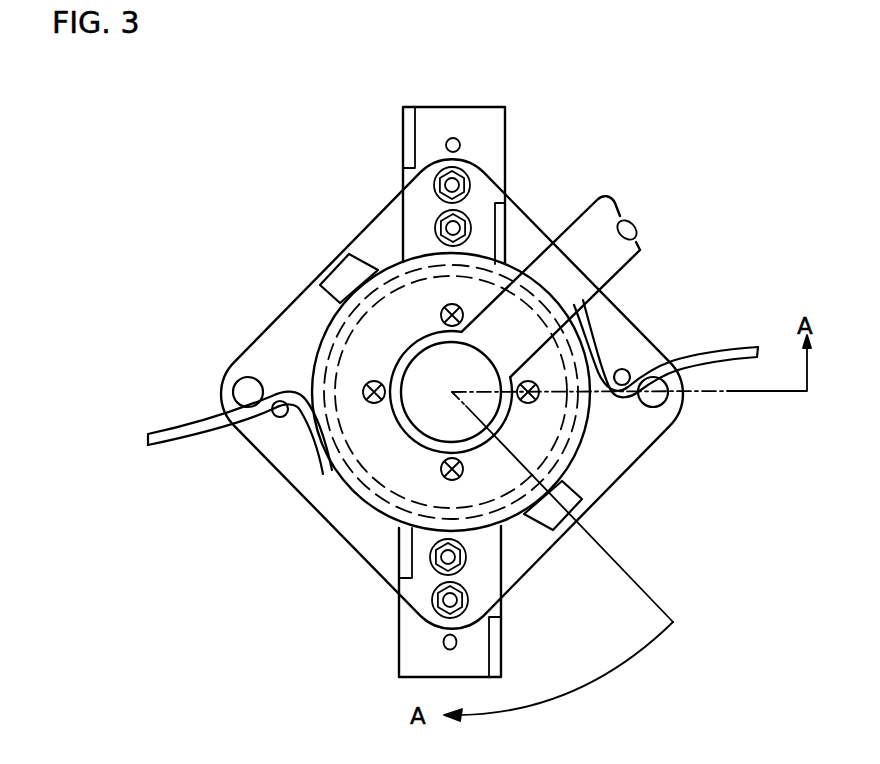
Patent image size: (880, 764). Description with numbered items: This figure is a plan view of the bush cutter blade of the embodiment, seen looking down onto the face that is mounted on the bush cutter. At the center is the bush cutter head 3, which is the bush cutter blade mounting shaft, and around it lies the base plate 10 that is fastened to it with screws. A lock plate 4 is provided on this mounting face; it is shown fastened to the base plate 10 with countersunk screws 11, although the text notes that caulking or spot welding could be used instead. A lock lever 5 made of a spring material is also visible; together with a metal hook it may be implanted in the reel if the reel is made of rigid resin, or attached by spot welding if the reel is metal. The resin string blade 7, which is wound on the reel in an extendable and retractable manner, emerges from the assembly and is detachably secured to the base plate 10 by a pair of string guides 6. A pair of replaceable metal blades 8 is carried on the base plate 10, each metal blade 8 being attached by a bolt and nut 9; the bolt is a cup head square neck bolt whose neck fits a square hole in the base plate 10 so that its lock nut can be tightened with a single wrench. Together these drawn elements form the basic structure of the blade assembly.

The bush cutter head 3 is at (503, 338).
The lock plate 4 is at (413, 302).
The lock lever 5 is at (335, 282).
The string guides 6 is at (248, 392).
The resin string blade 7 is at (232, 412).
The metal blades 8 is at (482, 145).
The bolt and nut 9 is at (452, 185).
The base plate 10 is at (525, 227).
The countersunk screws 11 is at (533, 386).